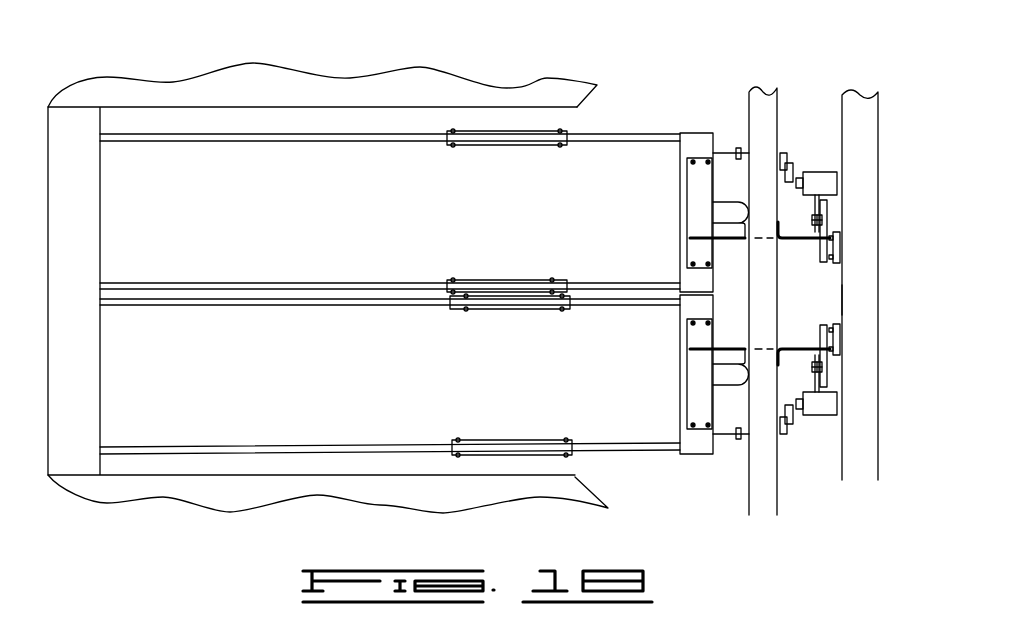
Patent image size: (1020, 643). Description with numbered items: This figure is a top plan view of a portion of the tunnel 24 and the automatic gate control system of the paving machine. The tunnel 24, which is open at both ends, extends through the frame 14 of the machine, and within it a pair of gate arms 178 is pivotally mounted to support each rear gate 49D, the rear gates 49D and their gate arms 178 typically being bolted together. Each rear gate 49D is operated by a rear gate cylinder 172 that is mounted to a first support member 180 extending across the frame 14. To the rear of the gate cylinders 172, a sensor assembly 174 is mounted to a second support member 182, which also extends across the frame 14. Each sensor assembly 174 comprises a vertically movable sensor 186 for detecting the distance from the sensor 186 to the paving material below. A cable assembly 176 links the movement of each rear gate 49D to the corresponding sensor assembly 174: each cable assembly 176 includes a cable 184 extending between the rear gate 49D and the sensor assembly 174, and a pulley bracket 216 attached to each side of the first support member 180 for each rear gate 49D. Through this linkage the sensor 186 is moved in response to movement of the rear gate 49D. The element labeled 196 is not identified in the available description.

The frame 14 is at (376, 85).
The tunnel 24 is at (548, 190).
The rear gate 49D is at (693, 140).
The rear gate cylinder 172 is at (725, 208).
The sensor assembly 174 is at (813, 165).
The cable assembly 176 is at (731, 247).
The gate arm 178 is at (270, 134).
The first support member 180 is at (767, 113).
The second support member 182 is at (866, 301).
The cable 184 is at (797, 242).
The sensor 186 is at (830, 176).
The plate 196 is at (842, 238).
The pulley bracket 216 is at (792, 233).